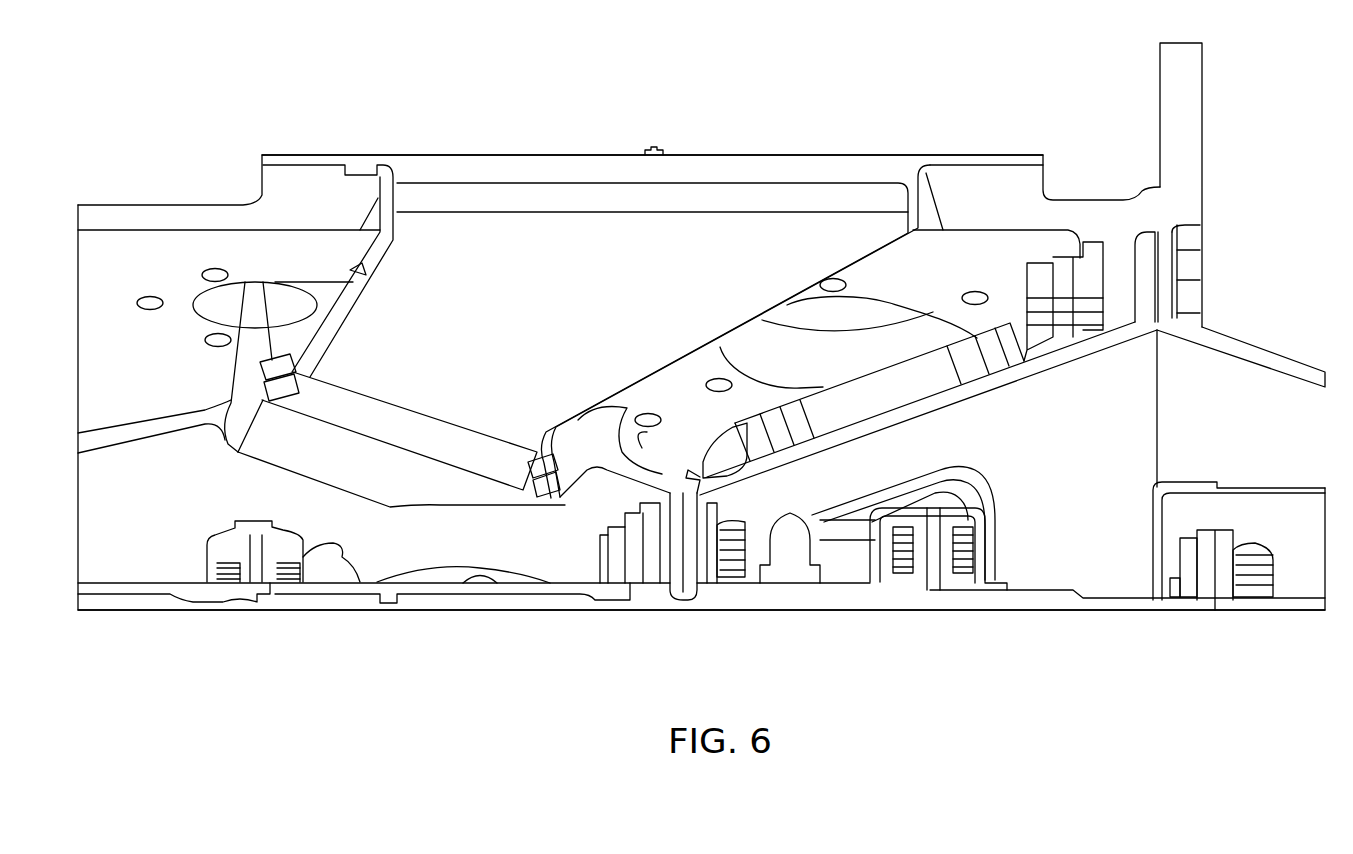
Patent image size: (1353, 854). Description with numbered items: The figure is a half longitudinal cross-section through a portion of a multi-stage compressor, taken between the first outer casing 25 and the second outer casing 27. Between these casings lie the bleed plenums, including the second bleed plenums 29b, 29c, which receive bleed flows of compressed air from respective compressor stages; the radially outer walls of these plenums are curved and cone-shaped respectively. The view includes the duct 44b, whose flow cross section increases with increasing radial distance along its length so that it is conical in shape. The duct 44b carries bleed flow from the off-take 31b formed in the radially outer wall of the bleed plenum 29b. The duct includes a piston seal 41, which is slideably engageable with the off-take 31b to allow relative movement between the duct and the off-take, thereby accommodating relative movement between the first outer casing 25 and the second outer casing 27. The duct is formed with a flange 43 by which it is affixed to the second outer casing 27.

The first outer casing 25 is at (168, 602).
The second outer casing 27 is at (1207, 198).
The second bleed plenum 29b is at (373, 545).
The second bleed plenum 29c is at (1115, 497).
The off-take 31b is at (576, 487).
The piston seal 41 is at (262, 374).
The flange 43 is at (1003, 155).
The duct 44b is at (310, 332).